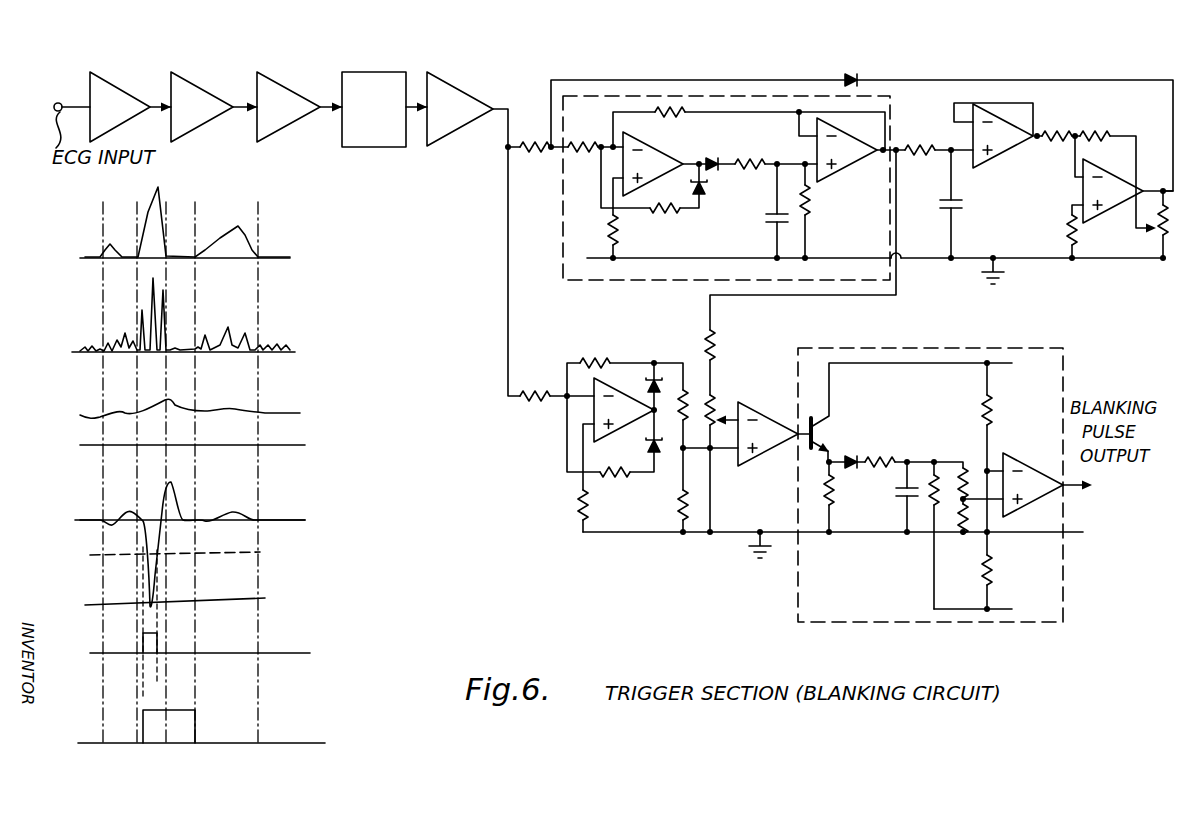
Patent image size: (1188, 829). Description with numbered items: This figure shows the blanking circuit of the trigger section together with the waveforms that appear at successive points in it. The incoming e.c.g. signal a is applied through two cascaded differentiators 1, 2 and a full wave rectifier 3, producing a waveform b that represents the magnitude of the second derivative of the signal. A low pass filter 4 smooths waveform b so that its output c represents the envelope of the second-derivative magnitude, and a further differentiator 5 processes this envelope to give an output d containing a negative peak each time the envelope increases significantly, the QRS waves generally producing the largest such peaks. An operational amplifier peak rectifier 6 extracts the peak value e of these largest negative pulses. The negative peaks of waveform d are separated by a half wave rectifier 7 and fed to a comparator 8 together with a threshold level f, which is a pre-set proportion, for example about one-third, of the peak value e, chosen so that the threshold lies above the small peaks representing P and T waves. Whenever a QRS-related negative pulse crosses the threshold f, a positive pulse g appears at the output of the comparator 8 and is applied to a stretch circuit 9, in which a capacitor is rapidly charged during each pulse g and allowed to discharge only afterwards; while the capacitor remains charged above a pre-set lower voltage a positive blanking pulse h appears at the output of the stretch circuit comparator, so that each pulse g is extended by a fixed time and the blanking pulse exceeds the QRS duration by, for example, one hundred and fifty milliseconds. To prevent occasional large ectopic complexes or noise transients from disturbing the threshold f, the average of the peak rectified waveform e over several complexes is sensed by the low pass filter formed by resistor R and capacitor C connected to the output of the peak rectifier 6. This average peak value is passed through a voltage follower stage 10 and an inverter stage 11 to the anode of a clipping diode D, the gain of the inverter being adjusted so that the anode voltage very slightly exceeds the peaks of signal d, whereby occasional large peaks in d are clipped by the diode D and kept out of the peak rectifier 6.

The differentiator 1 is at (145, 104).
The differentiator 2 is at (202, 108).
The full wave rectifier 3 is at (294, 108).
The low pass filter 4 is at (372, 152).
The differentiator 5 is at (452, 132).
The operational amplifier peak rectifier 6 is at (726, 230).
The half wave rectifier 7 is at (628, 426).
The comparator 8 is at (762, 454).
The stretch circuit 9 is at (916, 434).
The voltage follower stage 10 is at (1012, 156).
The inverter stage 11 is at (1110, 212).
The incoming e.c.g. signal a is at (196, 226).
The second derivative magnitude waveform b is at (327, 118).
The envelope waveform c is at (418, 120).
The differentiator output d is at (497, 118).
The peak value e is at (248, 598).
The threshold level f is at (235, 552).
The positive pulse g is at (809, 427).
The Blanking pulse h is at (197, 725).
The resistor of low pass filter RC R is at (926, 157).
The capacitor of low pass filter RC C is at (955, 204).
The clipping diode D is at (862, 123).